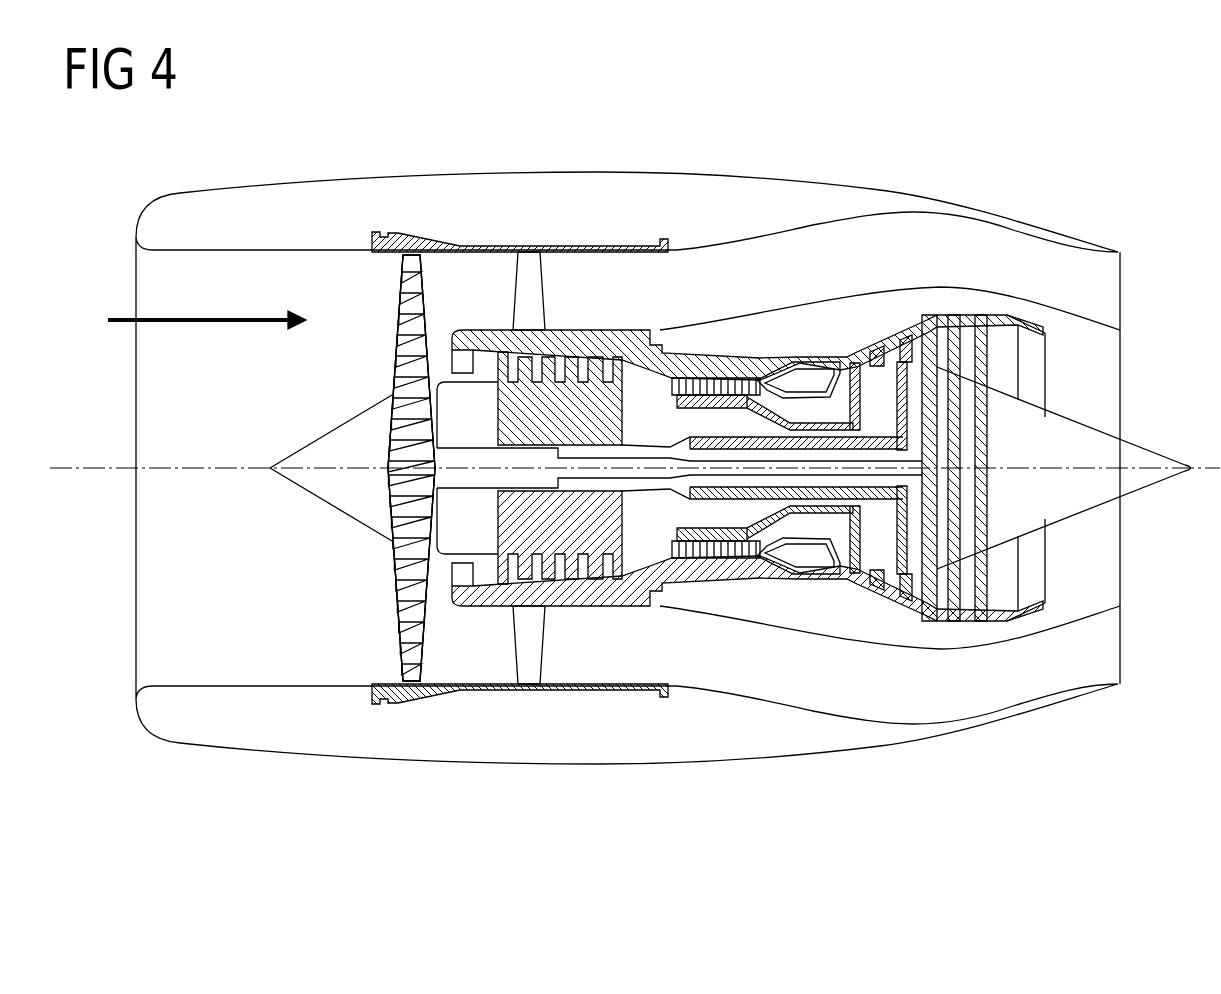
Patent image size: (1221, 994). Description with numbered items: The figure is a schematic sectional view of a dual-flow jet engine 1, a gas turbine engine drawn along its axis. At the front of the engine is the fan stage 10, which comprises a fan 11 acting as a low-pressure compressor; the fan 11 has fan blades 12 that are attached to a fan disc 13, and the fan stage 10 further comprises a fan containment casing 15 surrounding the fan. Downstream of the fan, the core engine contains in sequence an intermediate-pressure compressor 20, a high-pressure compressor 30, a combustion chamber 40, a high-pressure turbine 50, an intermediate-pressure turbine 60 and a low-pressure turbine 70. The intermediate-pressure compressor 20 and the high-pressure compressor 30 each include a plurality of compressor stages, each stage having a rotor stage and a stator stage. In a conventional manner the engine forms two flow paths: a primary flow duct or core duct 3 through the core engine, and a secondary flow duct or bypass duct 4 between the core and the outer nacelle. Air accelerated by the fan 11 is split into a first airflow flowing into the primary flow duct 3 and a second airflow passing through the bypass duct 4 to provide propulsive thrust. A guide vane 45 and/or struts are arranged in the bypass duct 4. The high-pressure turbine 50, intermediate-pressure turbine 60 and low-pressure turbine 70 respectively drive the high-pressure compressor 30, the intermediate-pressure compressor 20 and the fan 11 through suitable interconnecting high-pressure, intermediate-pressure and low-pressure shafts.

The dual-flow jet engine 1 is at (589, 170).
The primary flow duct 3 is at (488, 368).
The bypass duct 4 is at (468, 270).
The fan stage 10 is at (365, 371).
The fan 11 is at (397, 307).
The fan blades 12 is at (413, 630).
The fan disc 13 is at (387, 528).
The fan containment casing 15 is at (412, 237).
The intermediate-pressure compressor 20 is at (558, 368).
The high-pressure compressor 30 is at (736, 366).
The combustion chamber 40 is at (803, 378).
The guide vane 45 is at (528, 280).
The high-pressure turbine 50 is at (878, 361).
The intermediate-pressure turbine 60 is at (916, 355).
The low-pressure turbine 70 is at (994, 343).